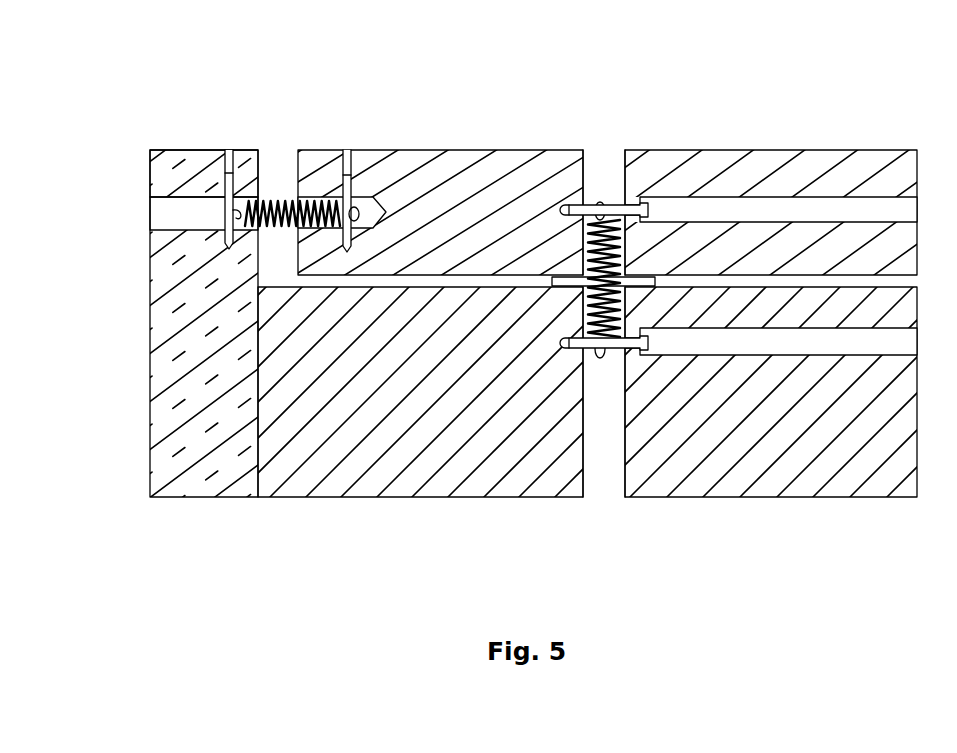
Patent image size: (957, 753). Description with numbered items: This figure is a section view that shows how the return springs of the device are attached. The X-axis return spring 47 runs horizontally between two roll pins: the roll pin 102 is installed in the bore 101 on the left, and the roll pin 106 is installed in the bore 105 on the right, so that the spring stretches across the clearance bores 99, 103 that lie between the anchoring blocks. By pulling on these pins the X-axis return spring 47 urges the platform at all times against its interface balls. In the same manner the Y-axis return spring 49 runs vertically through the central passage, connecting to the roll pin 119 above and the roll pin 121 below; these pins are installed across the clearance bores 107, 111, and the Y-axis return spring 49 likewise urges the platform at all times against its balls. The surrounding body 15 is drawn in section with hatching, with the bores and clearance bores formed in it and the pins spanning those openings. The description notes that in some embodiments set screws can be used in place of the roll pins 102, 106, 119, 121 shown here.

The housing body 15 is at (838, 497).
The X-axis return spring 47 is at (281, 217).
The Y-axis return spring 49 is at (590, 248).
The clearance bore 99 is at (162, 213).
The bore 101 is at (227, 150).
The roll pin 102 is at (223, 188).
The clearance bore 103 is at (375, 197).
The bore 105 is at (347, 150).
The roll pin 106 is at (350, 204).
The clearance bore 107 is at (603, 158).
The clearance bore 111 is at (602, 485).
The roll pin 119 is at (635, 197).
The roll pin 121 is at (637, 349).